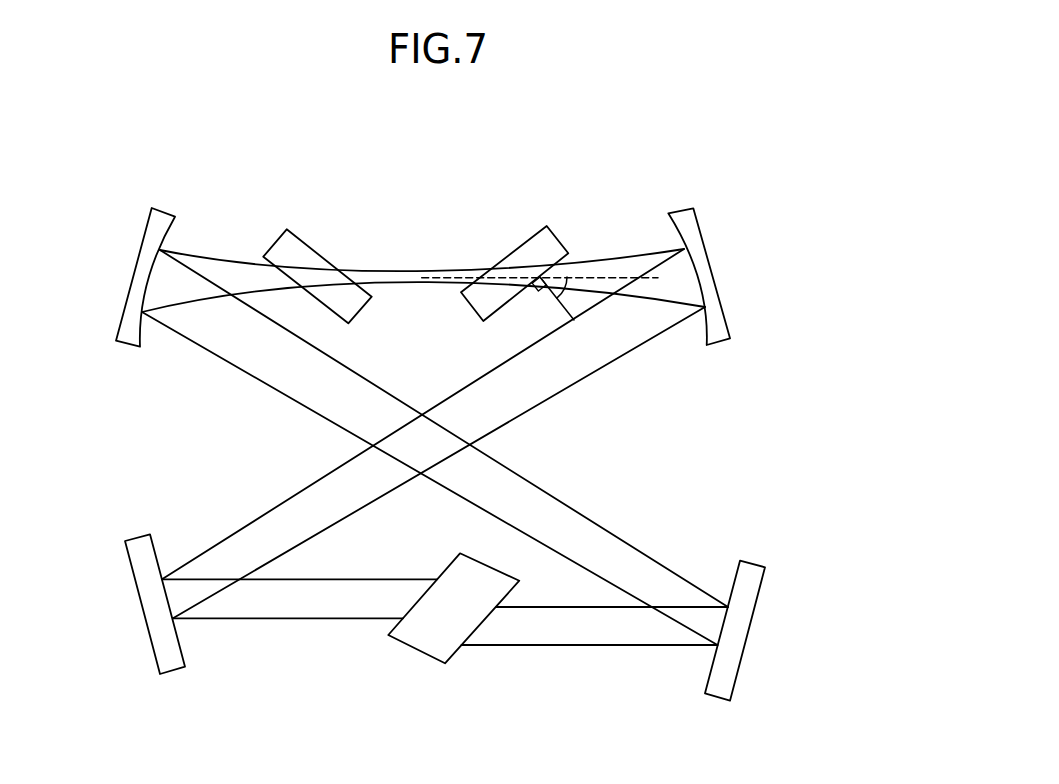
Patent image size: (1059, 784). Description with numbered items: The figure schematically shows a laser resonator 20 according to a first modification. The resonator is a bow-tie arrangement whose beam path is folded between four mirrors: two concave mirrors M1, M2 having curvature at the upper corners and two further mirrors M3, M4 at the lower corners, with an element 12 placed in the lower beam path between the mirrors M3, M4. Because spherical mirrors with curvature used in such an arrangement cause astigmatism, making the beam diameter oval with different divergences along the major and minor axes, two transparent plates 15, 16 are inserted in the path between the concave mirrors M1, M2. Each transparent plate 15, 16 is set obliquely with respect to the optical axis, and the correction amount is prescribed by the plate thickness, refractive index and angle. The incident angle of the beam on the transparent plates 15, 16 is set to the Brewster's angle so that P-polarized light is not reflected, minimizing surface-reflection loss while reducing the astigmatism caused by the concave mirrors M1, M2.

The laser resonator 20 is at (429, 180).
The concave mirror M1 is at (720, 346).
The concave mirror M2 is at (127, 347).
The mirror M3 is at (755, 560).
The mirror M4 is at (136, 533).
The laser medium / optical element 12 is at (455, 557).
The transparent plate 15 is at (523, 240).
The transparent plate 16 is at (305, 244).